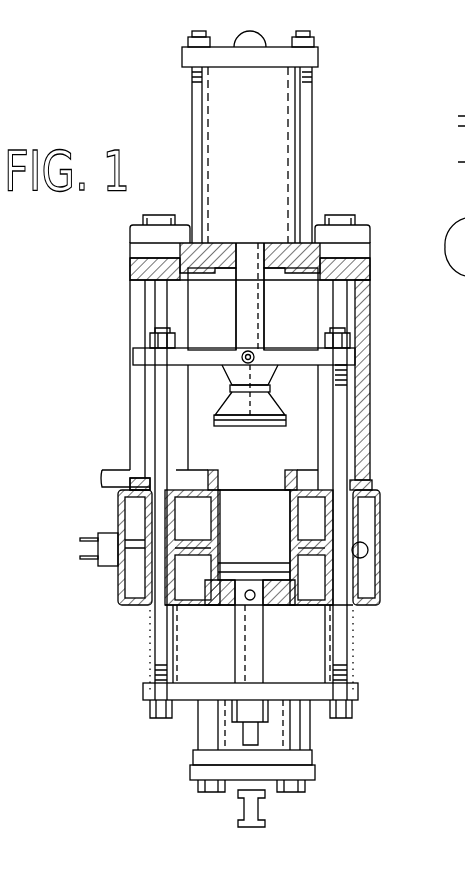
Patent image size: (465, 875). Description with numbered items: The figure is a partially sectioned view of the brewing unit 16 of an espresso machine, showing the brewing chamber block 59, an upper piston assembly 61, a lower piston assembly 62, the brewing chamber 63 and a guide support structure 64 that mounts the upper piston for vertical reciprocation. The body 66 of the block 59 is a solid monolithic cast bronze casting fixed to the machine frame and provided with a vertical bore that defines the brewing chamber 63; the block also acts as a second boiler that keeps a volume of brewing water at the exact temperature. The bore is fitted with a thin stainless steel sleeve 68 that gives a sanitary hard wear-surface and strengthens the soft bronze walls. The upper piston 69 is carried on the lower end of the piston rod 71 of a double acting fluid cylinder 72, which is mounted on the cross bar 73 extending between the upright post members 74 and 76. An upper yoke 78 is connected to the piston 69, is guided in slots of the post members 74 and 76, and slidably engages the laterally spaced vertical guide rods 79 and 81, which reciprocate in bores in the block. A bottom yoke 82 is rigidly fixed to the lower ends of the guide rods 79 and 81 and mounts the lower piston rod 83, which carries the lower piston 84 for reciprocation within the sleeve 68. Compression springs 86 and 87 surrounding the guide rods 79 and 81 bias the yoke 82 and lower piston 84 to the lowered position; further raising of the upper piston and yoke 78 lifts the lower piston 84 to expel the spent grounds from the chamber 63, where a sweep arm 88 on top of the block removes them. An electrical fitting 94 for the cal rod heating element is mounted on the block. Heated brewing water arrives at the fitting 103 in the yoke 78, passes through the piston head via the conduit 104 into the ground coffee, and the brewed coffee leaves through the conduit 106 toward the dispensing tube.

The brewing unit 16 is at (112, 633).
The brewing chamber block 59 is at (388, 528).
The upper piston assembly 61 is at (300, 390).
The lower piston assembly 62 is at (280, 655).
The brewing chamber 63 is at (252, 497).
The guide support structure 64 is at (375, 258).
The body 66 is at (215, 598).
The stainless steel sleeve 68 is at (278, 485).
The upper piston 69 is at (300, 425).
The piston rod 71 is at (240, 291).
The double acting fluid cylinder 72 is at (290, 118).
The cross bar 73 is at (290, 245).
The upright post member 74 is at (372, 305).
The upright post member 76 is at (130, 312).
The upper yoke 78 is at (350, 355).
The guide rod 79 is at (345, 447).
The guide rod 81 is at (135, 414).
The bottom yoke 82 is at (350, 693).
The lower piston rod 83 is at (243, 652).
The lower piston 84 is at (270, 560).
The compression spring 86 is at (350, 622).
The compression spring 87 is at (150, 658).
The sweep arm 88 is at (256, 504).
The electrical fitting 94 is at (106, 570).
The fitting 103 is at (270, 348).
The conduit 104 is at (214, 425).
The conduit 106 is at (255, 600).